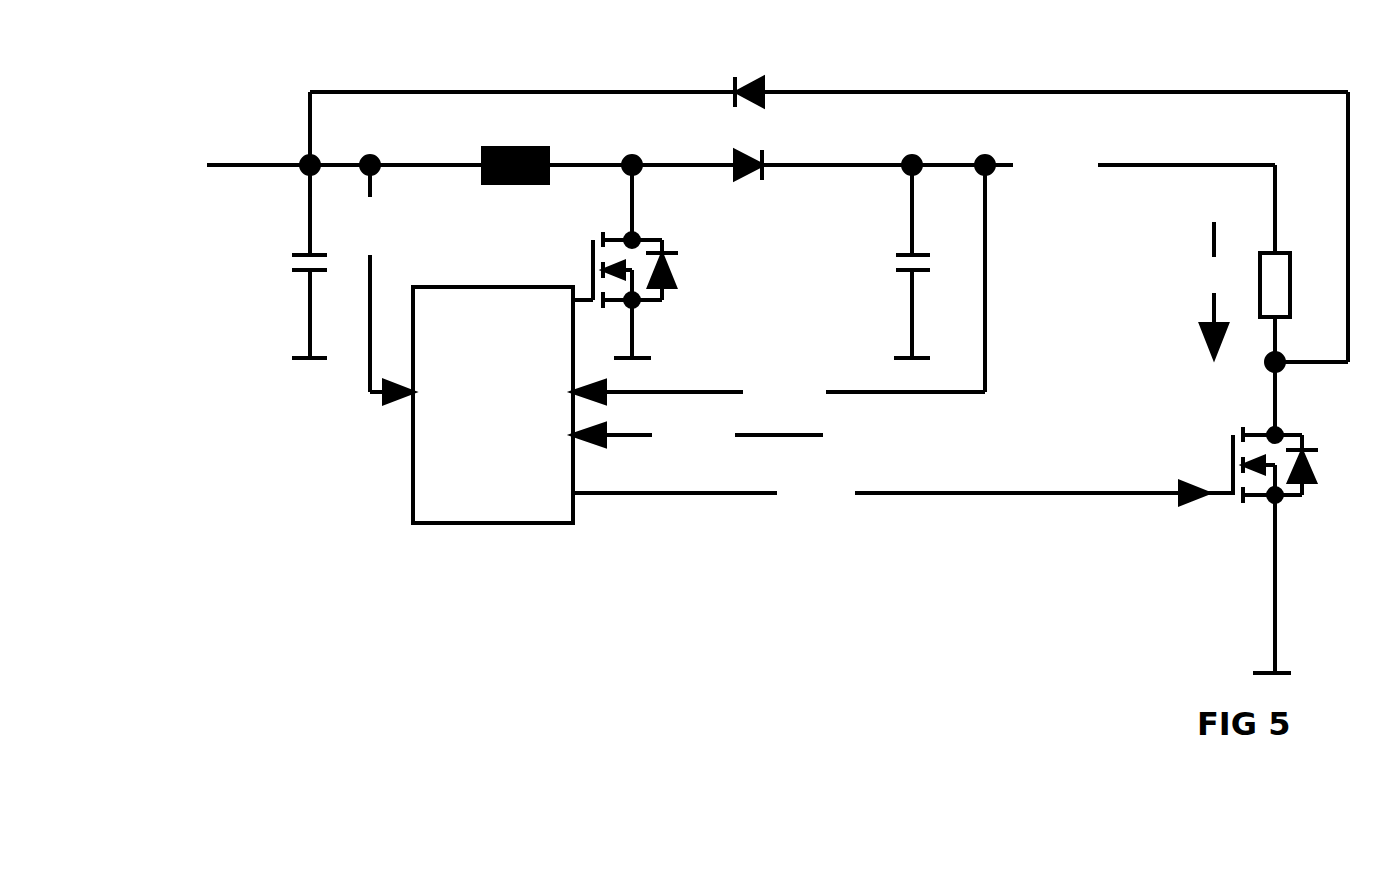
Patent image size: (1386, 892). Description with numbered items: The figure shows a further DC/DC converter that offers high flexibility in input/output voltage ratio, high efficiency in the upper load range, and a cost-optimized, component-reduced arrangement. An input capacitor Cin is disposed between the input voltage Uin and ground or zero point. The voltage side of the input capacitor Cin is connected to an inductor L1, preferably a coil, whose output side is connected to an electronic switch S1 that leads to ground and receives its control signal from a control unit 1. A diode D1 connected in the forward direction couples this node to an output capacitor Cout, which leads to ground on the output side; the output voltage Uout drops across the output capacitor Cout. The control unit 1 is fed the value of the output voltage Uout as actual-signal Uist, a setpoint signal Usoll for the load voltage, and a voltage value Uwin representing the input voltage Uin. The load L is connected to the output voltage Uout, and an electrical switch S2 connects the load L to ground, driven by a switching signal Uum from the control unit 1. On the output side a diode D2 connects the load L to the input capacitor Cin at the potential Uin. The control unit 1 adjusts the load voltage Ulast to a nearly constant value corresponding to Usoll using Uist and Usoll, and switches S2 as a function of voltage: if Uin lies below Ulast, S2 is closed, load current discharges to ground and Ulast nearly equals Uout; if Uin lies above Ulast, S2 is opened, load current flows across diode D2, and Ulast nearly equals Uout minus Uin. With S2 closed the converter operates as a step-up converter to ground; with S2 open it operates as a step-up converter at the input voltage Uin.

The control unit 1 is at (502, 472).
The input voltage Uin is at (560, 137).
The input capacitor Cin is at (271, 261).
The voltage value (input signal) Uwin is at (375, 284).
The inductor L1 is at (515, 148).
The electronic switch S1 is at (653, 261).
The diode D1 is at (757, 184).
The diode D2 is at (829, 73).
The output capacitor Cout is at (875, 261).
The output voltage Uout is at (1130, 171).
The actual-signal Uist is at (779, 286).
The setpoint signal Usoll is at (698, 436).
The switching signal Uum is at (903, 496).
The load L is at (1304, 263).
The load voltage Ulast is at (1214, 289).
The electrical switch S2 is at (1300, 536).